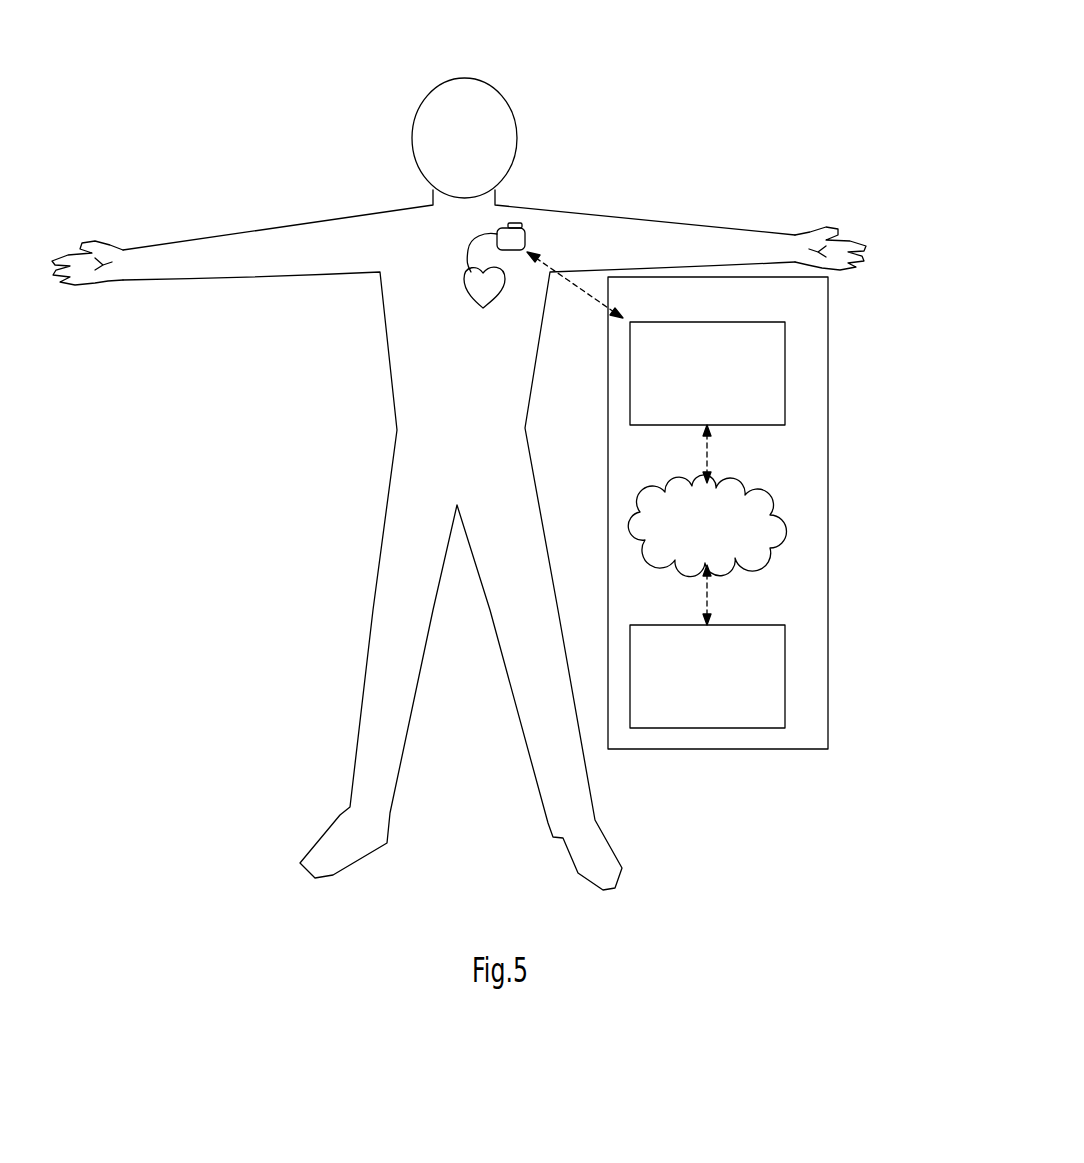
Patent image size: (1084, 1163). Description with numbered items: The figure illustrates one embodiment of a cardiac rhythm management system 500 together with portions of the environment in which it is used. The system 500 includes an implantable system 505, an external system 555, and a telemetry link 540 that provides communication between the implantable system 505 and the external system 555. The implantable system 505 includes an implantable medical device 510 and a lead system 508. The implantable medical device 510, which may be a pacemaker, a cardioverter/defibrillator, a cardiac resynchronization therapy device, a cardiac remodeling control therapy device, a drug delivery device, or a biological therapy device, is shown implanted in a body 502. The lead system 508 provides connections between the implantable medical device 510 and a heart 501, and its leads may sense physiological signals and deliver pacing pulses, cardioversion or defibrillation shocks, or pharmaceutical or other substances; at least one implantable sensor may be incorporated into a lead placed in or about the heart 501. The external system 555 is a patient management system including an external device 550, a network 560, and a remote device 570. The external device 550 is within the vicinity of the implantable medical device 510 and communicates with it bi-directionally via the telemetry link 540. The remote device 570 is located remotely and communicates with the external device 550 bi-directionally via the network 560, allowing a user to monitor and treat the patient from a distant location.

The cardiac rhythm management system 500 is at (790, 48).
The heart 501 is at (465, 290).
The body 502 is at (407, 378).
The implantable system 505 is at (513, 224).
The lead system 508 is at (468, 233).
The implantable medical device 510 is at (526, 240).
The telemetry link 540 is at (600, 298).
The external device 550 is at (766, 321).
The external system 555 is at (817, 333).
The network 560 is at (760, 490).
The remote device 570 is at (766, 625).